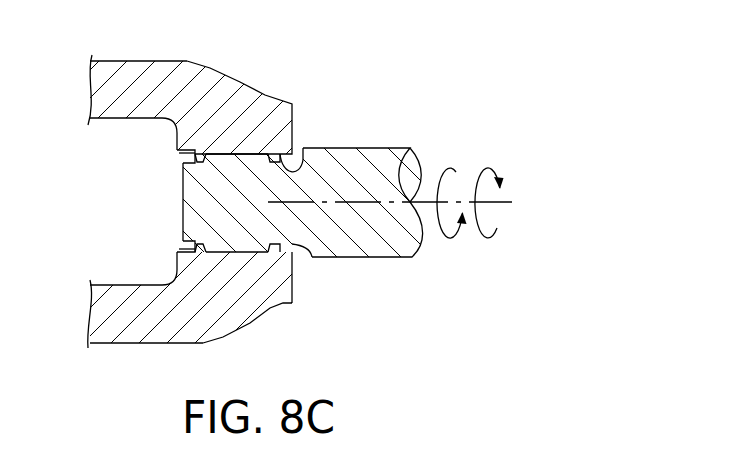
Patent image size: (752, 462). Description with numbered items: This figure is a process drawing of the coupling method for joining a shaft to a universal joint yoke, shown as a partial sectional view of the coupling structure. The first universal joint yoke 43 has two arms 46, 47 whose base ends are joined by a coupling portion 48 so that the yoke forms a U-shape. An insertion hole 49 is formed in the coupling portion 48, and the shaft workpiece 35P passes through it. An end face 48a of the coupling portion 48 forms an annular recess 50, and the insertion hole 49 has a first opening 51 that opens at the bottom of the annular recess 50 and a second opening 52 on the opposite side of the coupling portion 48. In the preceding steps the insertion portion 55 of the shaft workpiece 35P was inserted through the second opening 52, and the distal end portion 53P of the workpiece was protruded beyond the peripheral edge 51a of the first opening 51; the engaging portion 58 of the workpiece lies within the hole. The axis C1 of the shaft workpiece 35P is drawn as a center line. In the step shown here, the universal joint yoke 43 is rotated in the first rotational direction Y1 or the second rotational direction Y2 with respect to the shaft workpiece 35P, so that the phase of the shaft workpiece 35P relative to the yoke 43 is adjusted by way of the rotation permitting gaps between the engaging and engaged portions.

The first universal joint yoke 43 is at (145, 62).
The arm 46 is at (98, 110).
The arm 47 is at (98, 327).
The coupling portion 48 is at (217, 140).
The end face 48a is at (176, 142).
The insertion hole 49 is at (302, 165).
The annular recess 50 is at (184, 153).
The first opening 51 is at (183, 249).
The peripheral edge 51a is at (177, 258).
The second opening 52 is at (295, 246).
The shaft end portion 53P is at (187, 203).
The insertion portion 55 is at (239, 209).
The bearing body 58 is at (232, 156).
The shaft workpiece 35P is at (370, 147).
The axis C1 is at (353, 203).
The first rotational direction Y1 is at (452, 163).
The second rotational direction Y2 is at (488, 165).